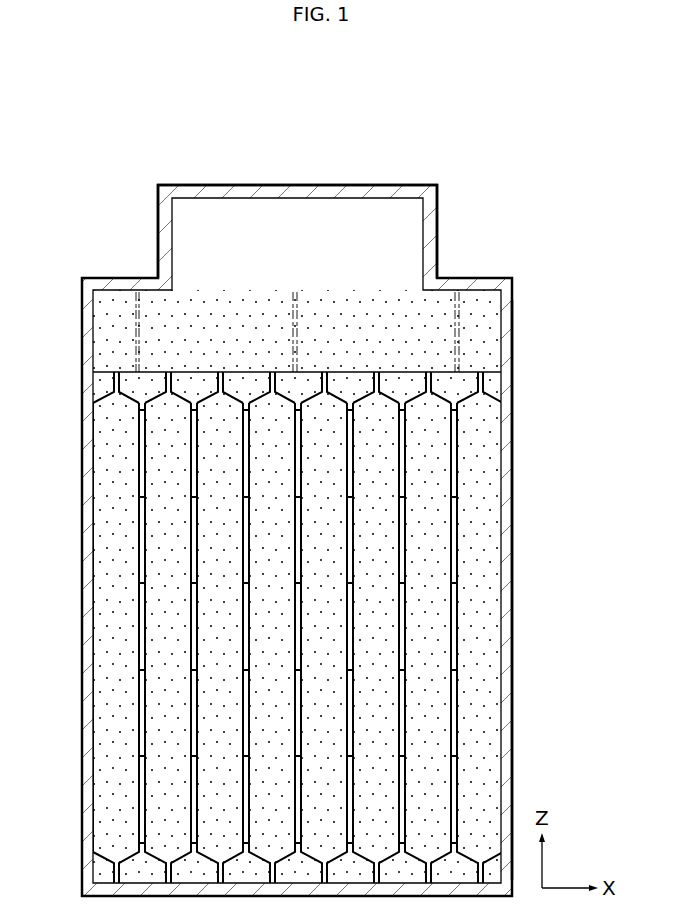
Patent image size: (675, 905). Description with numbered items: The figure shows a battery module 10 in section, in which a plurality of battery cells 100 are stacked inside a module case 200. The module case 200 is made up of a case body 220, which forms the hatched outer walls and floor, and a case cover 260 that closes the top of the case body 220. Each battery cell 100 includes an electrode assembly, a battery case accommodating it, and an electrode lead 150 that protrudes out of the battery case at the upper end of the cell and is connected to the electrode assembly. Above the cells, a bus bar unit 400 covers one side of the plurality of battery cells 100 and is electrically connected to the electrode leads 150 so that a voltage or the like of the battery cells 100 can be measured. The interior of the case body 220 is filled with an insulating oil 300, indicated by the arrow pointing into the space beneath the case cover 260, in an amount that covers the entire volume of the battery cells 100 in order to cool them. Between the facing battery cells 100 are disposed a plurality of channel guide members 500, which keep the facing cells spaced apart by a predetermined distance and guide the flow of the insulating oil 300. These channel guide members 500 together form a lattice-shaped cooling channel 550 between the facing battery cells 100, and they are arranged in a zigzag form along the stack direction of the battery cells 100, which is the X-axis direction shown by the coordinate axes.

The battery module 10 is at (129, 133).
The battery cell 100 is at (110, 478).
The electrode lead 150 is at (113, 380).
The module case 200 is at (516, 198).
The case body 220 is at (514, 512).
The case cover 260 is at (383, 185).
The insulating oil 300 is at (268, 276).
The bus bar unit 400 is at (113, 320).
The channel guide member 500 is at (143, 632).
The cooling channel 550 is at (142, 545).